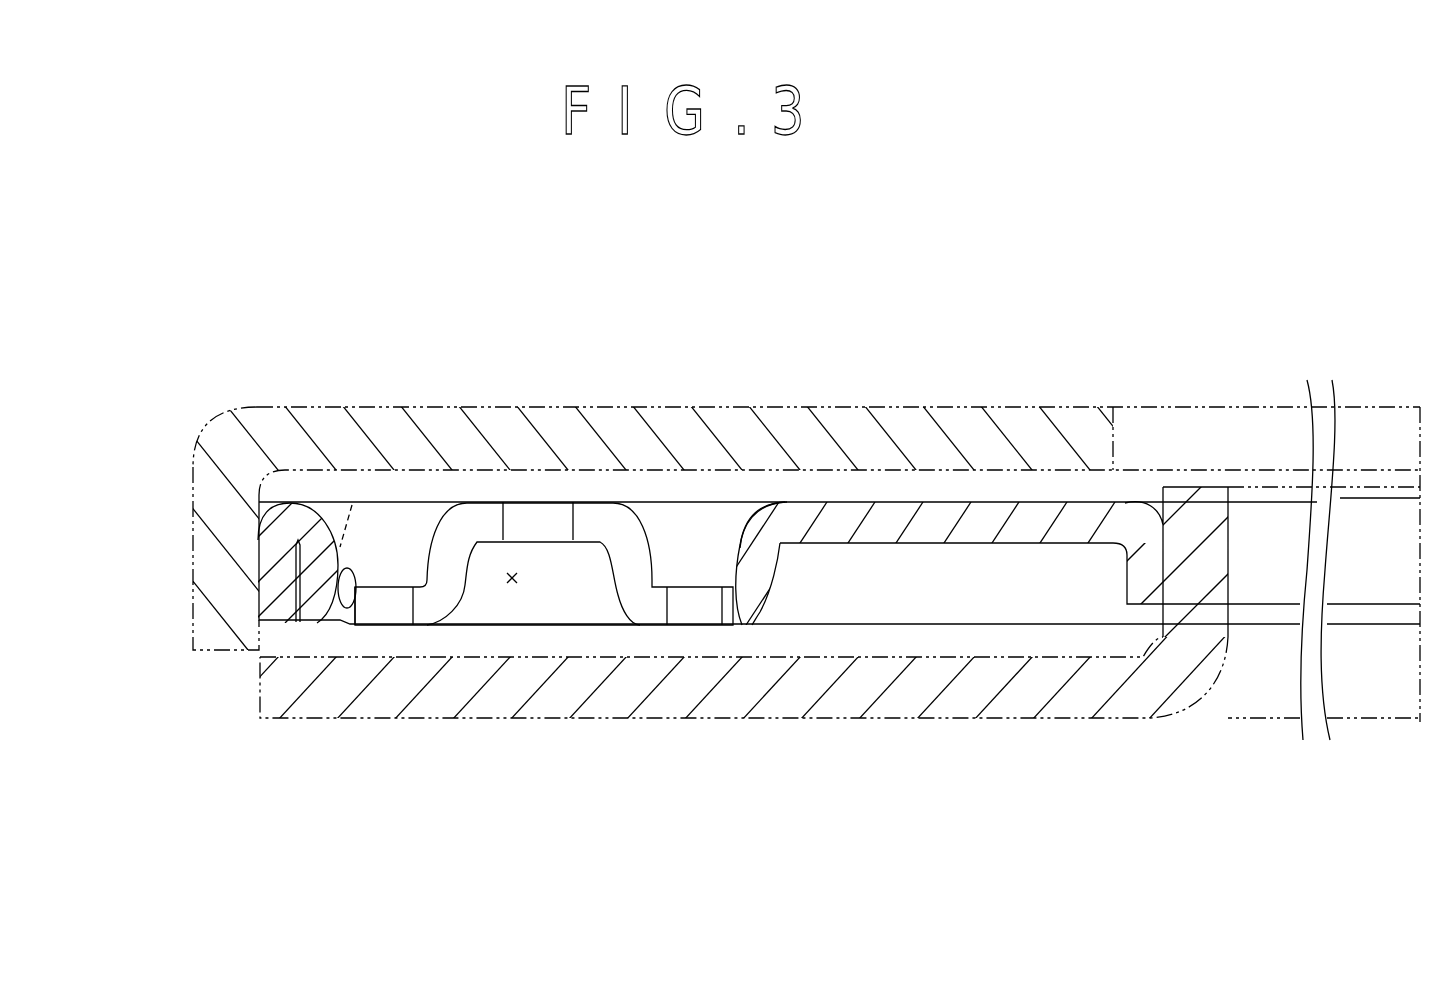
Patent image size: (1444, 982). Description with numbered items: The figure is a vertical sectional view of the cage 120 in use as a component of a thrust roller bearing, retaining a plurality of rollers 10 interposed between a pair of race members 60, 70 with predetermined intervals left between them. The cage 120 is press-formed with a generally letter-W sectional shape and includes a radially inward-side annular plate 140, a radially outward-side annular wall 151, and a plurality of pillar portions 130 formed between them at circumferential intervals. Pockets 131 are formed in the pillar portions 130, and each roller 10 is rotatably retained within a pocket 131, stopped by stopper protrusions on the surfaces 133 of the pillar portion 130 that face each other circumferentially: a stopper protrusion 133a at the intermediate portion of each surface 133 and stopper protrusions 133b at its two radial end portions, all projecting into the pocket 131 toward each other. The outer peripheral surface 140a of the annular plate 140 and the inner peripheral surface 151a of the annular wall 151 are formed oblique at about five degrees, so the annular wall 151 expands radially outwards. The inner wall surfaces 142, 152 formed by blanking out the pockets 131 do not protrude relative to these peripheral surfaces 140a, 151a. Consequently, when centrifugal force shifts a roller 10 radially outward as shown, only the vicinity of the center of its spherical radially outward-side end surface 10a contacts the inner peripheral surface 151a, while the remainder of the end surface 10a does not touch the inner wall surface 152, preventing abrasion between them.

The roller 10 is at (320, 481).
The radially outward-side end surface 10a is at (262, 407).
The race member 70 is at (933, 437).
The cage 120 is at (862, 492).
The race member 60 is at (995, 705).
The pillar portion 130 is at (703, 615).
The pocket 131 is at (512, 587).
The surface 133 is at (457, 577).
The stopper protrusion 133a is at (541, 523).
The stopper protrusion 133b is at (384, 616).
The inner wall surface 142 is at (722, 590).
The radially inward-side annular plate 140 is at (983, 533).
The outer peripheral surface 140a is at (742, 572).
The radially outward-side annular wall 151 is at (318, 567).
The inner peripheral surface 151a is at (340, 620).
The inner wall surface 152 is at (347, 630).